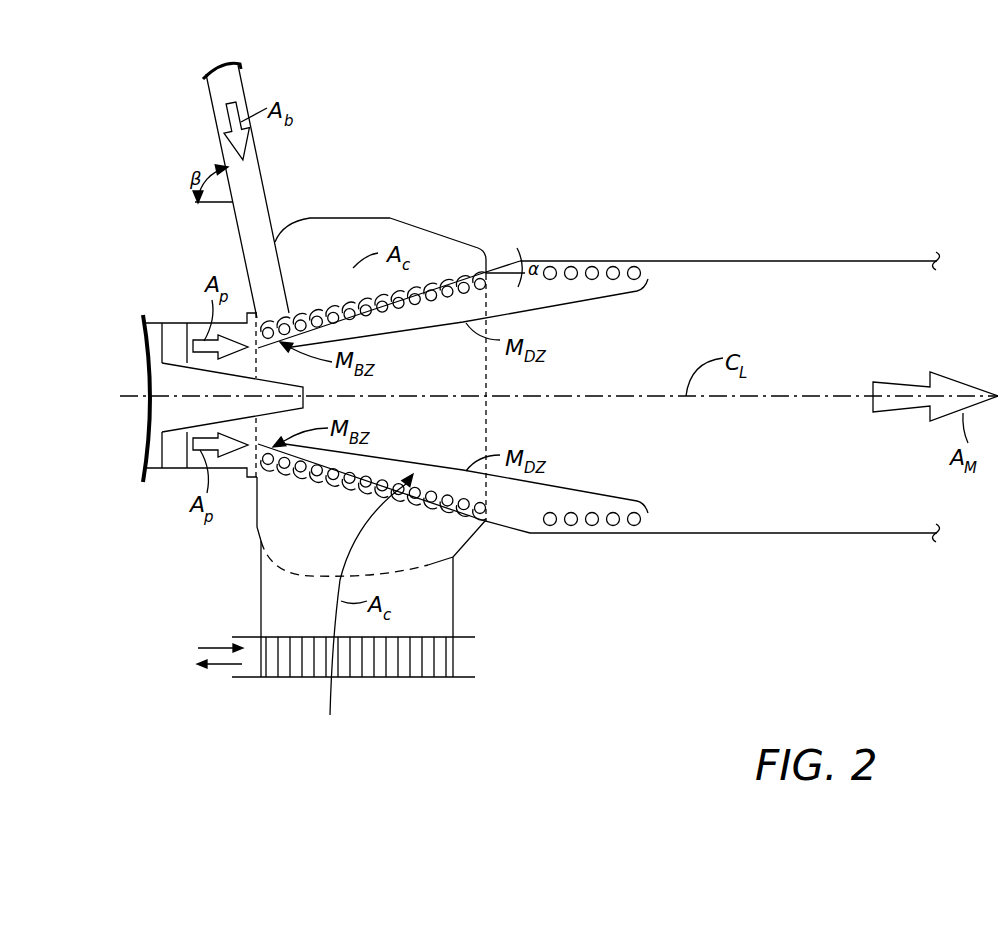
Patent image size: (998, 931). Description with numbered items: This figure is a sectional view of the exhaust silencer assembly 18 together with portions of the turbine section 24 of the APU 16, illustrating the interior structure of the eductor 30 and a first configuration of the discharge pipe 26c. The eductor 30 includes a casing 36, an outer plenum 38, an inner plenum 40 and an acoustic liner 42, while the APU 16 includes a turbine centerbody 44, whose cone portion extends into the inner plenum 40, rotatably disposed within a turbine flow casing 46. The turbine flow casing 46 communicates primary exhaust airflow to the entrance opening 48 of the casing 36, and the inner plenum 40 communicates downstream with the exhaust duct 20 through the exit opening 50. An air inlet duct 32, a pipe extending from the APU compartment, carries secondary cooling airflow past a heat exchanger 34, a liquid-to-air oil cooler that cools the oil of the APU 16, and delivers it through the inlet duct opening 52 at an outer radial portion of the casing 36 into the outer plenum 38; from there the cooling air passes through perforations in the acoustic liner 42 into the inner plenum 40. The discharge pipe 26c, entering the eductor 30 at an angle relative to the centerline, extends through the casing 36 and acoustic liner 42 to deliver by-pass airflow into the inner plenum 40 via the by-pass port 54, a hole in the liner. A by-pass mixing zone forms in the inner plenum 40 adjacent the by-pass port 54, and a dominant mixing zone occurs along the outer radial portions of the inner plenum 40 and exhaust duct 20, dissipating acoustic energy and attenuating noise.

The auxiliary power unit 16 is at (78, 313).
The exhaust silencer assembly 18 is at (591, 187).
The exhaust duct 20 is at (771, 535).
The turbine section 24 is at (131, 425).
The discharge pipe 26c is at (225, 157).
The eductor 30 is at (481, 225).
The air inlet duct 32 is at (260, 588).
The heat exchanger 34 is at (413, 655).
The casing 36 is at (373, 217).
The outer plenum 38 is at (378, 319).
The inner plenum 40 is at (420, 427).
The acoustic liner 42 is at (302, 315).
The turbine centerbody 44 is at (162, 382).
The turbine flow casing 46 is at (225, 469).
The entrance opening 48 is at (271, 368).
The exit opening 50 is at (507, 409).
The inlet duct opening 52 is at (300, 556).
The by-pass port 54 is at (350, 336).